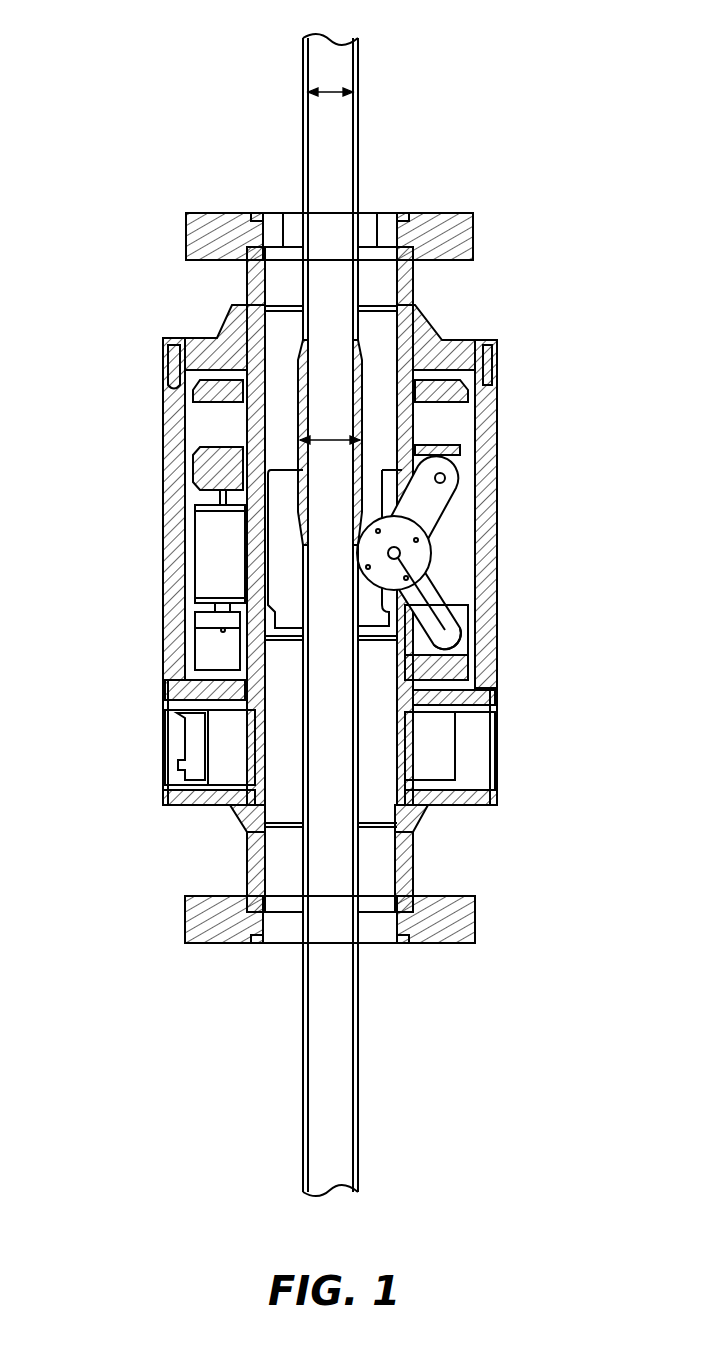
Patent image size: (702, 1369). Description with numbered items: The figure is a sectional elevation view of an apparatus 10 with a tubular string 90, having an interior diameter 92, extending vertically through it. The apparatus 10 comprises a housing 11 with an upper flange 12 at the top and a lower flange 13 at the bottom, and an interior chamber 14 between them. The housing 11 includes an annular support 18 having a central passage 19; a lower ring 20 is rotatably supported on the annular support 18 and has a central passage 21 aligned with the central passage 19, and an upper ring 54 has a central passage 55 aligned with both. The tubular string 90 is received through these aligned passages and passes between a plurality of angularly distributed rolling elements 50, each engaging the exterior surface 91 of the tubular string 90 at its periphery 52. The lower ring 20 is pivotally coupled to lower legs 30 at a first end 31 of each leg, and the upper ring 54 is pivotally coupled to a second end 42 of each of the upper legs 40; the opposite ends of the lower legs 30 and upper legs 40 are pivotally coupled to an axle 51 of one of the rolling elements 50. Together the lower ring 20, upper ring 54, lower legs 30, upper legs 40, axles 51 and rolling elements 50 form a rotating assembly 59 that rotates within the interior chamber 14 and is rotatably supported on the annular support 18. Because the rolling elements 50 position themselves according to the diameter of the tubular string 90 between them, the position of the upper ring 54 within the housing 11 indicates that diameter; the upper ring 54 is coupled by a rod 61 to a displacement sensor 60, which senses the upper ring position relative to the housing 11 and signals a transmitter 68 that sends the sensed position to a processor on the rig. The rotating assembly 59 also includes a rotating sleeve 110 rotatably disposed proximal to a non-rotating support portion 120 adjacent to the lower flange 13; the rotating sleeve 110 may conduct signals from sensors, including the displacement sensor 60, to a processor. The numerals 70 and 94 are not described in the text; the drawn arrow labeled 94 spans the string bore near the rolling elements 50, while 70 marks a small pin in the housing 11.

The apparatus 10 is at (126, 94).
The housing 11 is at (498, 399).
The upper flange 12 is at (186, 214).
The lower flange 13 is at (475, 906).
The interior chamber 14 is at (388, 348).
The annular support 18 is at (478, 700).
The central passage 19 is at (376, 655).
The lower ring 20 is at (456, 658).
The central passage 21 is at (285, 650).
The lower legs 30 is at (470, 601).
The first end 31 is at (455, 637).
The upper legs 40 is at (467, 551).
The second end 42 is at (450, 479).
The rolling elements 50 is at (458, 567).
The axle 51 is at (440, 583).
The periphery 52 is at (402, 553).
The upper ring 54 is at (200, 450).
The central passage 55 is at (270, 410).
The rotating assembly 59 is at (452, 445).
The displacement sensor 60 is at (166, 547).
The rod 61 is at (200, 505).
The transmitter 68 is at (200, 634).
The pin 70 is at (172, 390).
The tubular string 90 is at (331, 615).
The exterior surface 91 is at (303, 136).
The interior diameter 92 is at (331, 92).
The restricted diameter 94 is at (330, 438).
The rotating sleeve 110 is at (256, 846).
The non-rotating support portion 120 is at (414, 874).